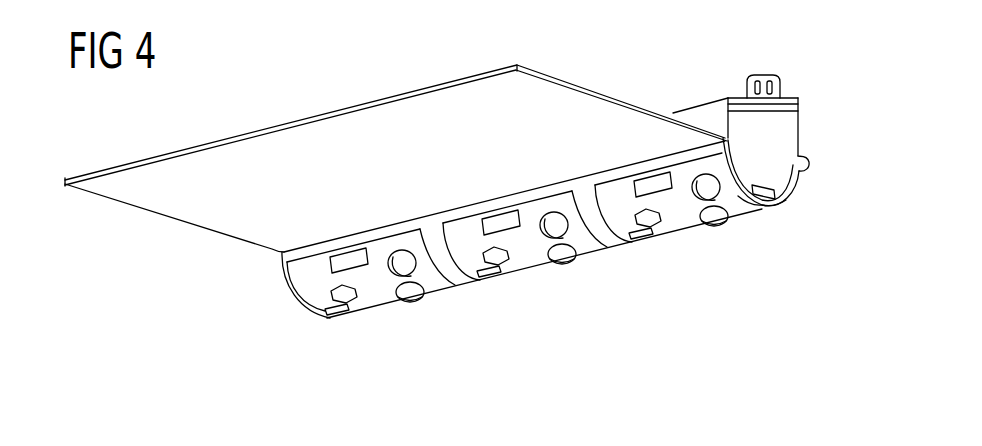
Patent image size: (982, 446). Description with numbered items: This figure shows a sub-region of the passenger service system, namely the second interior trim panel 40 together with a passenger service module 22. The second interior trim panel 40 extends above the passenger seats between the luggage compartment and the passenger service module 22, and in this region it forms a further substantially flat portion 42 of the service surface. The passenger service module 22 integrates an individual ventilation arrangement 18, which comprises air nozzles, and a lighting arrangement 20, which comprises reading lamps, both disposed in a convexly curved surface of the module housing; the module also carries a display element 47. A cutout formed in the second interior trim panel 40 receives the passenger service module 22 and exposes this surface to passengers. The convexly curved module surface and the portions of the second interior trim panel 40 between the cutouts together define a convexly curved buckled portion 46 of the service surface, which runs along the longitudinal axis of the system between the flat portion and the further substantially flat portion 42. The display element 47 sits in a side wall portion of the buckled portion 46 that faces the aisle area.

The second interior trim panel 40 is at (572, 103).
The further substantially flat portion 42 is at (190, 212).
The lighting arrangement 20 is at (337, 323).
The display element 47 is at (348, 263).
The individual ventilation arrangement 18 is at (408, 308).
The passenger service module 22 is at (786, 131).
The convexly curved buckled portion 46 is at (772, 217).